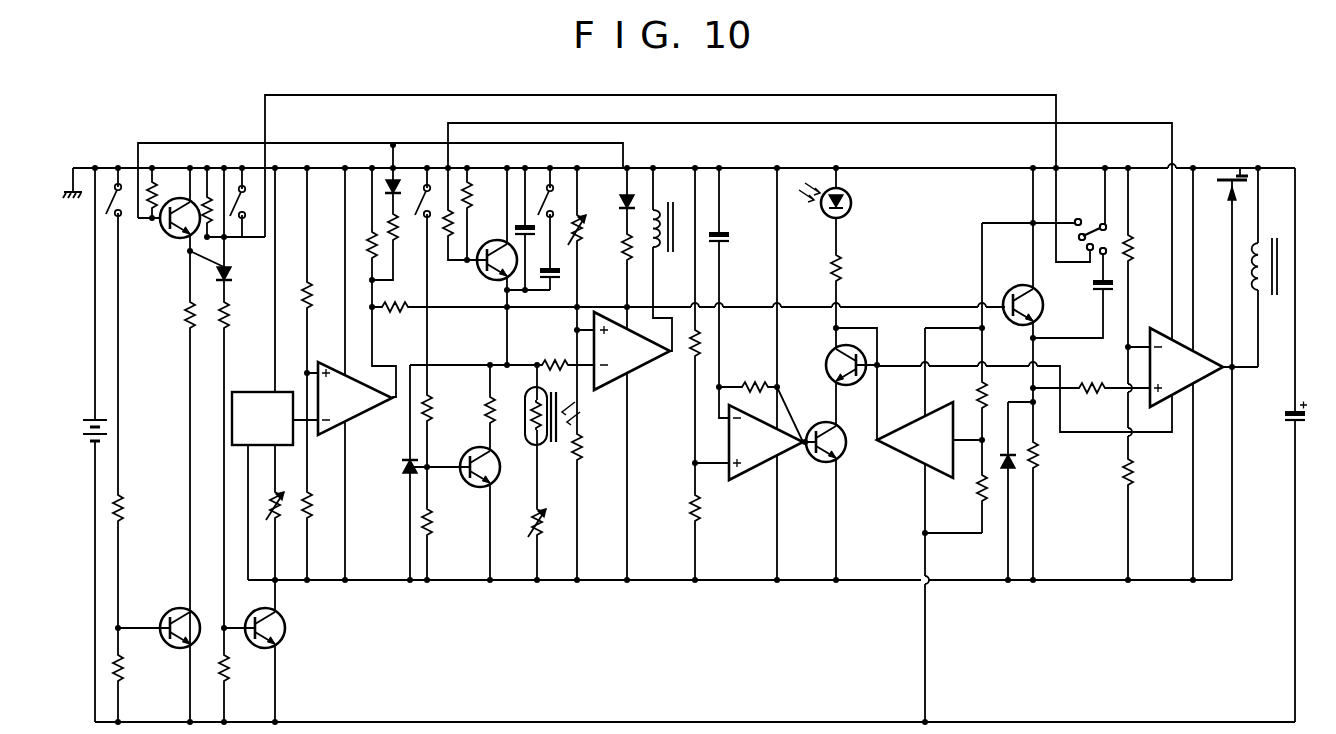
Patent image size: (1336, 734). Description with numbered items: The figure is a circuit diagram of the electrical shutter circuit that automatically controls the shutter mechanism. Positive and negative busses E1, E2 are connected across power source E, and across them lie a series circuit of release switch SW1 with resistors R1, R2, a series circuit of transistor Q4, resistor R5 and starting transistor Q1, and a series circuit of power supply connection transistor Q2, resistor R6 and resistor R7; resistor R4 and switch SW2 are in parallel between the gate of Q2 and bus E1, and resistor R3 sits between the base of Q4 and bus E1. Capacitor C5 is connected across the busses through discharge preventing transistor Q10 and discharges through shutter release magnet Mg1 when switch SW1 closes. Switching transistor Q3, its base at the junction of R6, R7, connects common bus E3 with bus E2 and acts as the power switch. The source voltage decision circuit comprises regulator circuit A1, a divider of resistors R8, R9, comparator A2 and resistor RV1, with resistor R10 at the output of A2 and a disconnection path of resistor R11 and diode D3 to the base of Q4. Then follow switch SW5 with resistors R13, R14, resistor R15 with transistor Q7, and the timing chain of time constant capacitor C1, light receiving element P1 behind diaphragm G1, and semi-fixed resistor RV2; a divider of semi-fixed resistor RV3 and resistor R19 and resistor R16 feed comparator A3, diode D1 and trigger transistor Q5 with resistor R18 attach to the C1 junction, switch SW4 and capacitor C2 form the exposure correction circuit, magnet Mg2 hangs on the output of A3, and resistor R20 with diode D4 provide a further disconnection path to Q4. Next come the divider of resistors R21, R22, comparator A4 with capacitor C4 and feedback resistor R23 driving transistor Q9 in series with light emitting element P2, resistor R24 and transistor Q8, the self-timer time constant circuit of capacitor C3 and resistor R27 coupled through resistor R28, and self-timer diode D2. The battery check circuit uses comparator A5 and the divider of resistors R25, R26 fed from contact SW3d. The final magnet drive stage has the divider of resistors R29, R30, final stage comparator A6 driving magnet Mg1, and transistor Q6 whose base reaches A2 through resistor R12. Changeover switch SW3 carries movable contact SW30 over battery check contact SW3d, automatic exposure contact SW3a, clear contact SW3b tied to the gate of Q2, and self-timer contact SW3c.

The power source E is at (104, 424).
The positive bus E1 is at (737, 168).
The negative bus E2 is at (668, 712).
The common bus E3 is at (660, 582).
The release switch SW1 is at (122, 217).
The switch SW2 is at (242, 187).
The changeover switch SW3 is at (1090, 211).
The automatic exposure contact SW3a is at (1079, 239).
The clear contact SW3b is at (1090, 251).
The self-timer contact SW3c is at (1102, 255).
The battery check contact SW3d is at (1075, 223).
The movable contact SW30 is at (1098, 228).
The switch SW4 is at (550, 187).
The normally open switch SW5 is at (424, 180).
The resistor R1 is at (122, 505).
The resistor R2 is at (122, 672).
The resistor R3 is at (154, 193).
The resistor R4 is at (207, 195).
The resistor R5 is at (186, 315).
The resistor R6 is at (230, 316).
The resistor R7 is at (228, 672).
The resistor R8 is at (308, 295).
The resistor R9 is at (309, 510).
The resistor R10 is at (370, 250).
The resistor R11 is at (395, 245).
The resistor R12 is at (401, 323).
The resistor R13 is at (428, 412).
The resistor R14 is at (428, 535).
The resistor R15 is at (488, 412).
The resistor R16 is at (556, 363).
The resistor R18 is at (470, 200).
The resistor R19 is at (447, 245).
The resistor R20 is at (627, 262).
The resistor R21 is at (693, 345).
The resistor R22 is at (697, 510).
The resistor R23 is at (752, 384).
The resistor R24 is at (840, 275).
The resistor R25 is at (975, 400).
The resistor R26 is at (975, 478).
The resistor R27 is at (1037, 455).
The resistor R28 is at (1094, 378).
The resistor R29 is at (1130, 245).
The resistor R30 is at (1130, 485).
The resistor RV1 is at (278, 525).
The semi-fixed resistor RV2 is at (530, 532).
The semi-fixed resistor RV3 is at (581, 250).
The starting transistor Q1 is at (176, 608).
The power supply connection transistor Q2 is at (231, 274).
The switching transistor Q3 is at (284, 620).
The transistor Q4 is at (172, 243).
The transistor Q5 is at (487, 282).
The transistor Q6 is at (1015, 322).
The transistor Q7 is at (498, 478).
The transistor Q8 is at (828, 364).
The transistor Q9 is at (843, 460).
The discharge preventing transistor Q10 is at (1235, 177).
The diode D1 is at (403, 478).
The diode D2 is at (1016, 466).
The diode D3 is at (390, 178).
The diode D4 is at (626, 200).
The time constant capacitor C1 is at (514, 228).
The capacitor C2 is at (551, 280).
The capacitor C3 is at (1113, 285).
The capacitor C4 is at (730, 236).
The capacitor C5 is at (1290, 417).
The regulator circuit A1 is at (262, 418).
The comparator A2 is at (355, 398).
The comparator A3 is at (632, 351).
The comparator A4 is at (766, 442).
The comparator A5 is at (915, 440).
The final stage comparator A6 is at (1186, 367).
The light receiving element P1 is at (526, 392).
The light emitting element P2 is at (852, 204).
The diaphragm G1 is at (553, 445).
The shutter release magnet Mg1 is at (1258, 292).
The magnet Mg2 is at (654, 205).